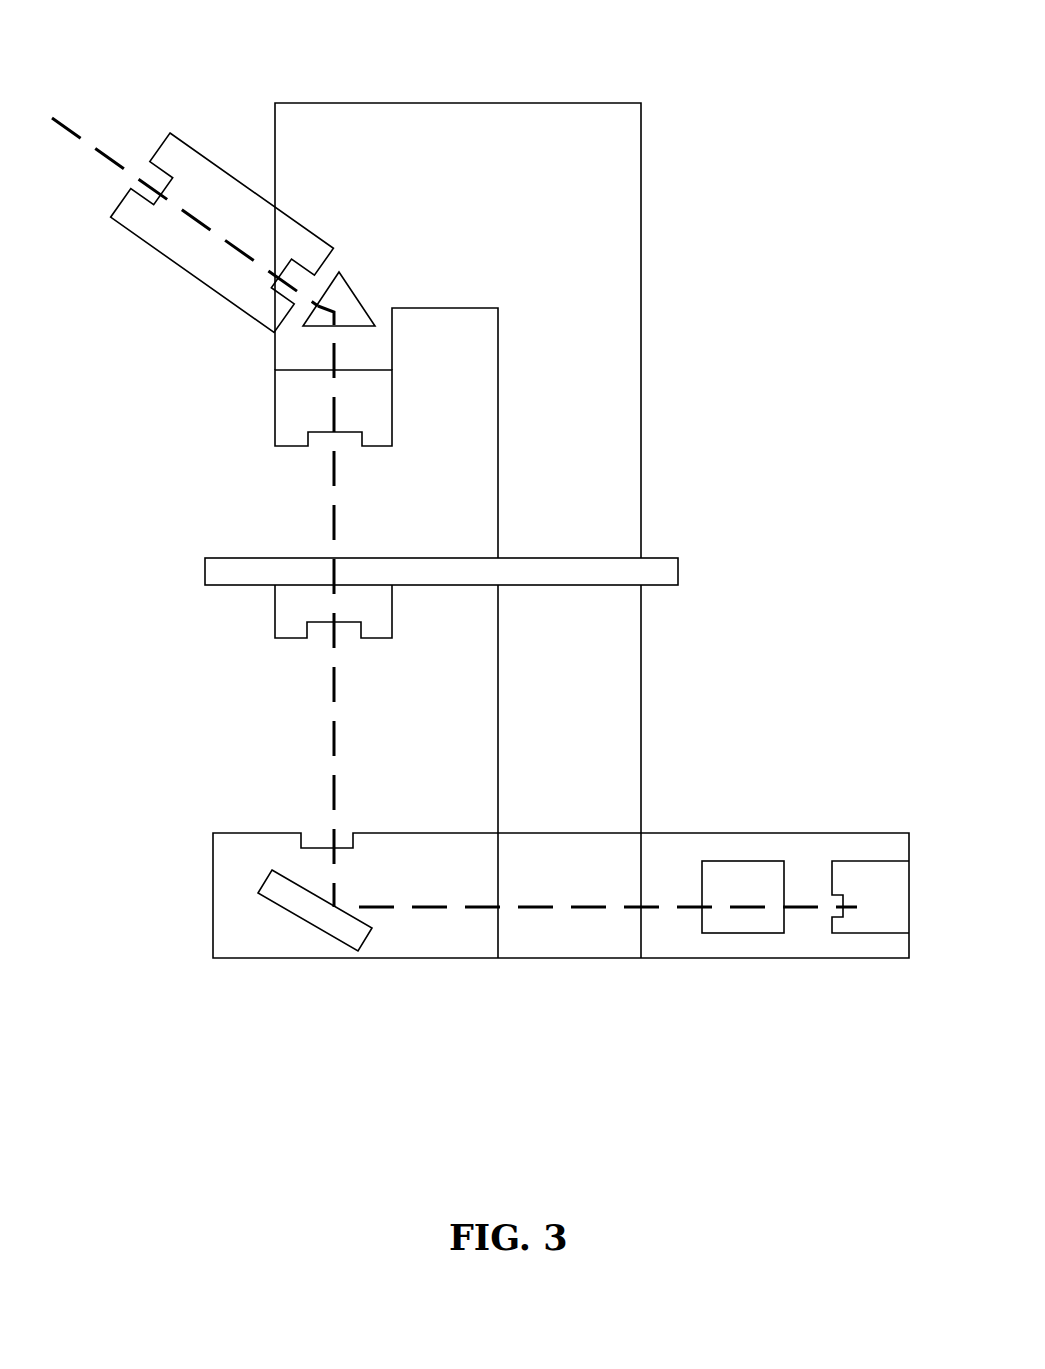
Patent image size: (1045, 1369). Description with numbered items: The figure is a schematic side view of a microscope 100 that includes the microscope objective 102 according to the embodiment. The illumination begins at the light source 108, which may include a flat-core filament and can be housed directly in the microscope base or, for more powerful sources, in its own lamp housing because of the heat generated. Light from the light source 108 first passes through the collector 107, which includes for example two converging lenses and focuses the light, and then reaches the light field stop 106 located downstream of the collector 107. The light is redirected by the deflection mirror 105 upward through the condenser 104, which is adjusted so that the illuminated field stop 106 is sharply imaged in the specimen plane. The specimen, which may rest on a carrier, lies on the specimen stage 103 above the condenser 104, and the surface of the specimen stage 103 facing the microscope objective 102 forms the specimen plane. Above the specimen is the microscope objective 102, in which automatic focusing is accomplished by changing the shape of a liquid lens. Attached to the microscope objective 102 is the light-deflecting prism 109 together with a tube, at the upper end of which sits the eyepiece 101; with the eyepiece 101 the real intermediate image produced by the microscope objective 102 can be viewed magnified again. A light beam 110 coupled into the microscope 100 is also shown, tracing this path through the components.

The microscope 100 is at (776, 83).
The eyepiece 101 is at (213, 175).
The microscope objective 102 is at (273, 407).
The specimen stage 103 is at (207, 570).
The condenser 104 is at (282, 623).
The deflection mirror 105 is at (307, 923).
The light field stop 106 is at (643, 868).
The collector 107 is at (730, 915).
The light source 108 is at (882, 888).
The prism 109 is at (357, 297).
The light beam 110 is at (103, 162).